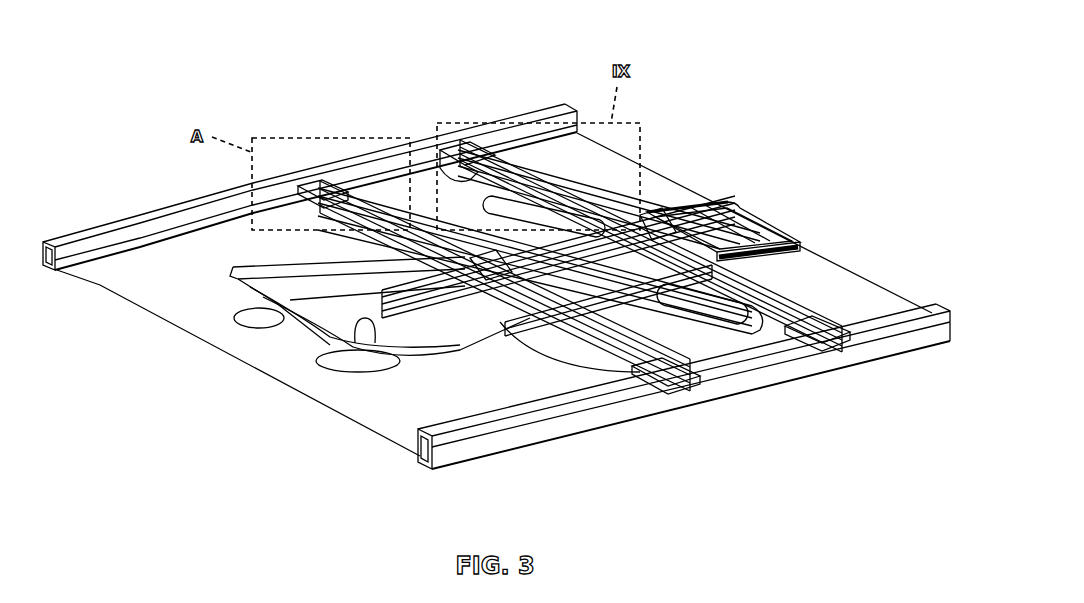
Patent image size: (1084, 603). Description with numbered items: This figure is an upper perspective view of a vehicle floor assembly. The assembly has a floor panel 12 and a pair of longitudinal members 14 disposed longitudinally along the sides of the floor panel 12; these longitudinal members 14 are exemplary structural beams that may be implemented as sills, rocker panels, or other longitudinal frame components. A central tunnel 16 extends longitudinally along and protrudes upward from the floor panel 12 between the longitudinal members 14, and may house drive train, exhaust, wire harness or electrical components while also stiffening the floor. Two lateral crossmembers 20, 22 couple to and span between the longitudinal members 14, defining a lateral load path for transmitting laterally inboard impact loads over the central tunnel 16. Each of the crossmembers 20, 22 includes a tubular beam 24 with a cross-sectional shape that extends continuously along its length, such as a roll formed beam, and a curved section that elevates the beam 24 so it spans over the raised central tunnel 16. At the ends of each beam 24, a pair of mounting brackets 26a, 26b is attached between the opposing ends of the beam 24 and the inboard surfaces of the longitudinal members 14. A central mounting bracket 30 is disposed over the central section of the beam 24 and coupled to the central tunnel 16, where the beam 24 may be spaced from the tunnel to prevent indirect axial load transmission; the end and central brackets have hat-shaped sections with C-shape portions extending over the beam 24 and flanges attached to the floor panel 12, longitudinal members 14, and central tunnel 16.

The floor panel 12 is at (606, 168).
The longitudinal members 14 is at (553, 113).
The central tunnel 16 is at (732, 208).
The crossmember 20 is at (566, 316).
The crossmember 22 is at (742, 303).
The tubular beam 24 is at (366, 193).
The mounting bracket 26a is at (323, 187).
The mounting bracket 26b is at (658, 362).
The central mounting bracket 30 is at (661, 230).